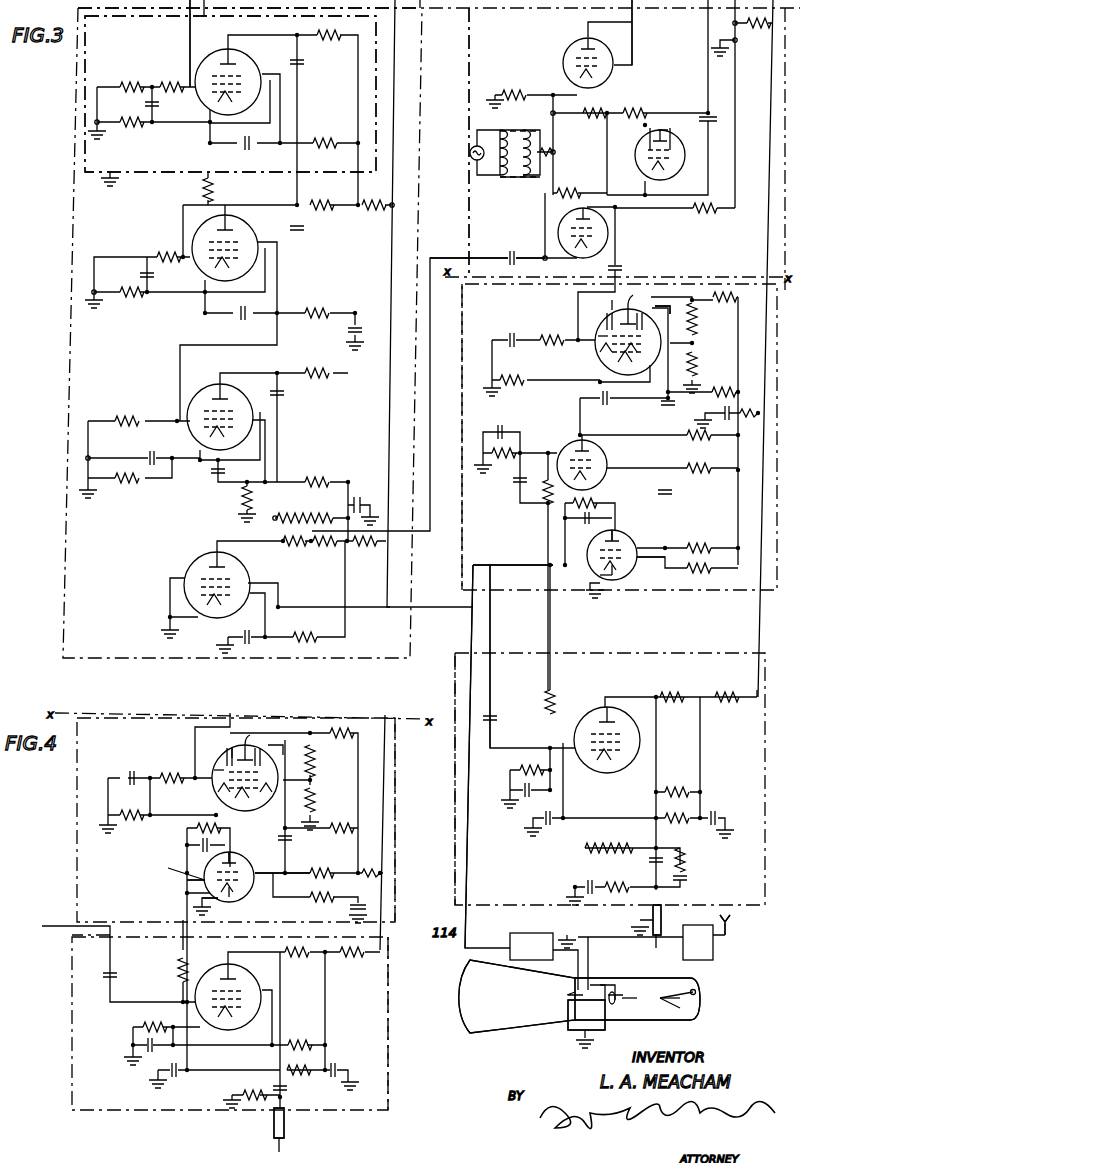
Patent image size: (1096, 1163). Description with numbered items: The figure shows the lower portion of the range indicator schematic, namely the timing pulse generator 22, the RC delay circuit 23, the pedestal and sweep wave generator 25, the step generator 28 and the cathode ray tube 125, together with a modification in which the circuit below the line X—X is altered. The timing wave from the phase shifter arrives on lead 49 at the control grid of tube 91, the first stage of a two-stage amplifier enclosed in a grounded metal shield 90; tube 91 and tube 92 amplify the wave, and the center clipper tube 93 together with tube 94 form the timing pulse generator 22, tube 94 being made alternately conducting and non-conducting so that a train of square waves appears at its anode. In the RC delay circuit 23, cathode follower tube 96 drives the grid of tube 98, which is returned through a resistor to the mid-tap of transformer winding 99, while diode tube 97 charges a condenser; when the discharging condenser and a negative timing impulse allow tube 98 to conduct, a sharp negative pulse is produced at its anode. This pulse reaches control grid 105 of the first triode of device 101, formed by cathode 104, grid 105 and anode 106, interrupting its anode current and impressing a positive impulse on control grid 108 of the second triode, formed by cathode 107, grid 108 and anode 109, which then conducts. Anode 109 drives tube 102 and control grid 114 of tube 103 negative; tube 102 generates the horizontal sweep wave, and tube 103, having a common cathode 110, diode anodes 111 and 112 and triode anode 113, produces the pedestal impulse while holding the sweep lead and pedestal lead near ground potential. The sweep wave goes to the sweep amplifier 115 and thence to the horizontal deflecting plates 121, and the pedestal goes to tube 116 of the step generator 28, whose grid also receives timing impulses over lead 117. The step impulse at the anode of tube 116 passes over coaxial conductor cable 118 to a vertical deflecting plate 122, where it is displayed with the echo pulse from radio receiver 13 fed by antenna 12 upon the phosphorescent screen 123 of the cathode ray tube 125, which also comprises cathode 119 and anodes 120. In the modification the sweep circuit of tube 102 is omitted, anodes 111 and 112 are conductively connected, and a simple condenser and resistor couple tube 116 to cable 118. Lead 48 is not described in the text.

In FIG. 3, the pulse generator 22 is at (422, 27).
In FIG. 3, the RC delay circuit 23 is at (469, 58).
In FIG. 3, the pedestal and sweep wave generator 25 is at (462, 308).
In FIG. 4, the pedestal and sweep wave generator 25 is at (397, 758).
In FIG. 3, the step generator 28 is at (707, 653).
In FIG. 4, the step generator 28 is at (390, 972).
In FIG. 3, the supply lead 48 is at (632, 42).
In FIG. 3, the lead 49 is at (190, 35).
In FIG. 3, the metal shield 90 is at (135, 178).
In FIG. 3, the electric discharge tube 91 is at (255, 66).
In FIG. 3, the electric discharge tube 92 is at (250, 232).
In FIG. 3, the center clipper tube 93 is at (240, 390).
In FIG. 3, the electric discharge tube 94 is at (240, 560).
In FIG. 3, the cathode follower tube 96 is at (600, 42).
In FIG. 3, the diode tube 97 is at (676, 140).
In FIG. 3, the electric discharge tube 98 is at (600, 222).
In FIG. 3, the transformer winding 99 is at (508, 130).
In FIG. 3, the electric discharge device 101 is at (585, 302).
In FIG. 4, the electric discharge device 101 is at (222, 762).
In FIG. 3, the electric discharge tube 102 is at (607, 458).
In FIG. 3, the discharge tube 103 is at (625, 572).
In FIG. 4, the discharge tube 103 is at (240, 898).
In FIG. 3, the cathode 104 is at (595, 358).
In FIG. 4, the cathode 104 is at (218, 800).
In FIG. 3, the control grid 105 is at (595, 328).
In FIG. 4, the control grid 105 is at (222, 780).
In FIG. 3, the anode 106 is at (600, 315).
In FIG. 4, the anode 106 is at (228, 752).
In FIG. 3, the cathode 107 is at (625, 371).
In FIG. 4, the cathode 107 is at (268, 812).
In FIG. 3, the control grid 108 is at (660, 307).
In FIG. 4, the control grid 108 is at (272, 745).
In FIG. 3, the anode 109 is at (645, 296).
In FIG. 4, the anode 109 is at (241, 740).
In FIG. 3, the cathode 110 is at (607, 580).
In FIG. 4, the cathode 110 is at (224, 905).
In FIG. 3, the anode 111 is at (600, 583).
In FIG. 4, the anode 111 is at (220, 905).
In FIG. 3, the anode 112 is at (661, 561).
In FIG. 4, the anode 112 is at (181, 870).
In FIG. 3, the anode 113 is at (618, 535).
In FIG. 4, the anode 113 is at (232, 860).
In FIG. 3, the control grid 114 is at (475, 598).
In FIG. 4, the control grid 114 is at (282, 883).
In FIG. 3, the sweep amplifier 115 is at (550, 630).
In FIG. 3, the electric discharge device 116 is at (615, 770).
In FIG. 4, the electric discharge device 116 is at (235, 1025).
In FIG. 3, the lead 117 is at (490, 630).
In FIG. 3, the coaxial conductor cable 118 is at (661, 918).
In FIG. 4, the coaxial conductor cable 118 is at (284, 1128).
In FIG. 3, the antenna 12 is at (732, 920).
In FIG. 3, the radio receiver 13 is at (713, 953).
In FIG. 3, the cathode 119 is at (672, 1005).
In FIG. 3, the anodes 120 is at (618, 1005).
In FIG. 3, the horizontal deflecting plates 121 is at (605, 990).
In FIG. 3, the vertical deflecting plates 122 is at (570, 1000).
In FIG. 3, the phosphorescent screen 123 is at (463, 998).
In FIG. 3, the cathode ray tube 125 is at (700, 990).